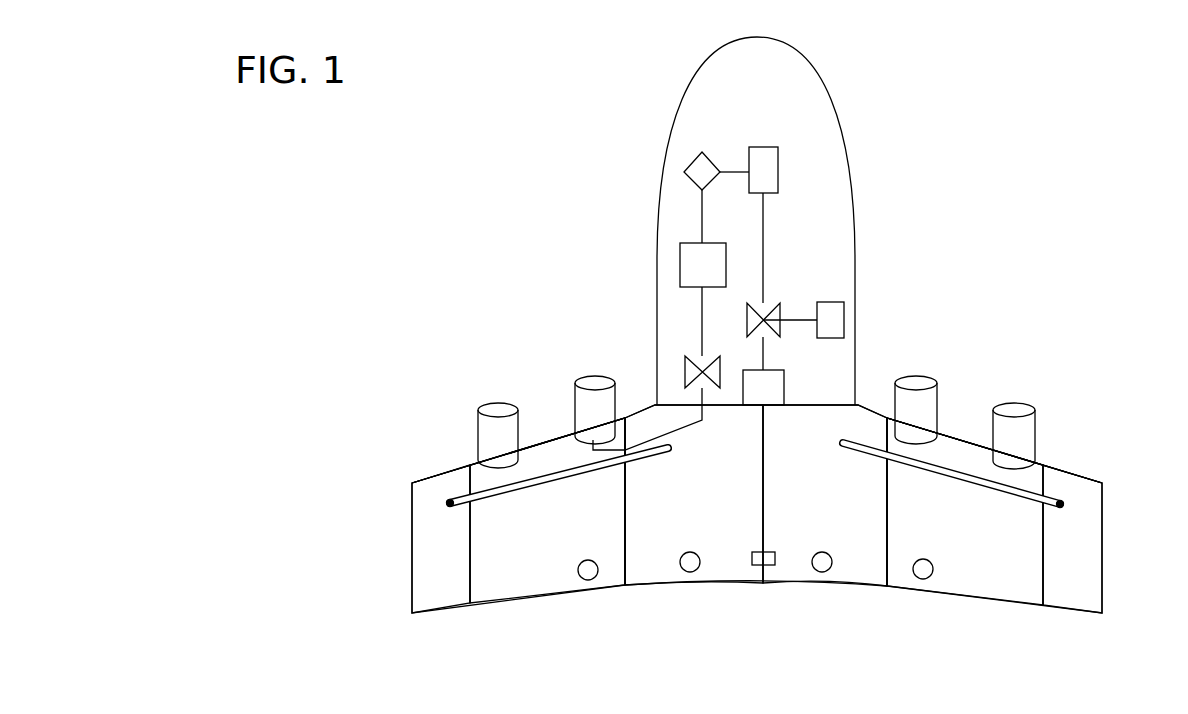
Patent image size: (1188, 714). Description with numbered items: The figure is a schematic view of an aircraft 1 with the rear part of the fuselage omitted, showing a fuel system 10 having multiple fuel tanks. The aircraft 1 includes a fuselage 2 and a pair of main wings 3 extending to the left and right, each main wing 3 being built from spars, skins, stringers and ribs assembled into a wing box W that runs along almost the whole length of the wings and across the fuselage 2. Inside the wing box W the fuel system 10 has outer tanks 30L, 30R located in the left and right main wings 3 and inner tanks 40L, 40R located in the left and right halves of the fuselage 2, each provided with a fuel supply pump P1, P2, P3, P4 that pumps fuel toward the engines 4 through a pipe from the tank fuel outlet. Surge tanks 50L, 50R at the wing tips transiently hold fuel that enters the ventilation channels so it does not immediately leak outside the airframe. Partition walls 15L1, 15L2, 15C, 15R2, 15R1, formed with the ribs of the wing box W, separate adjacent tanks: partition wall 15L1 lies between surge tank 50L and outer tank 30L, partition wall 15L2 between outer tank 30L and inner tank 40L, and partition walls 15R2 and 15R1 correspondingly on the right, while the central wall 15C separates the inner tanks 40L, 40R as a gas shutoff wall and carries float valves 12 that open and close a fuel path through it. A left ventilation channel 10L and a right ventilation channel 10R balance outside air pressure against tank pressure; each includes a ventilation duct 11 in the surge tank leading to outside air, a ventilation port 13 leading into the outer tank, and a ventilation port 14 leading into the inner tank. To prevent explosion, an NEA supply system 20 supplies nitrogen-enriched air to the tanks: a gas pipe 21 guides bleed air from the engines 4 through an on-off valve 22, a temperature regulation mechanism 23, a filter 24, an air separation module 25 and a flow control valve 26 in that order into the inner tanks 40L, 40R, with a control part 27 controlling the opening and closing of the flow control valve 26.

The aircraft 1 is at (934, 137).
The fuselage 2 is at (862, 205).
The main wing 3 is at (428, 468).
The engine 4 is at (495, 402).
The fuel system 10 is at (883, 602).
The left ventilation channel 10L is at (557, 470).
The right ventilation channel 10R is at (970, 470).
The ventilation duct 11 is at (446, 505).
The float valve 12 is at (751, 558).
The ventilation port 13 is at (564, 480).
The ventilation port 14 is at (672, 447).
The partition wall 15L1 is at (472, 572).
The partition wall 15L2 is at (628, 520).
The central wall 15C is at (766, 496).
The partition wall 15R1 is at (1044, 560).
The partition wall 15R2 is at (890, 540).
The NEA supply system 20 is at (769, 116).
The gas pipe 21 is at (736, 172).
The on-off valve 22 is at (688, 368).
The temperature regulation mechanism 23 is at (680, 265).
The filter 24 is at (690, 160).
The air separation module 25 is at (779, 172).
The flow control valve 26 is at (770, 305).
The control part 27 is at (845, 318).
The outer tank 30L is at (525, 603).
The outer tank 30R is at (975, 600).
The inner tank 40L is at (713, 590).
The inner tank 40R is at (795, 590).
The surge tank 50L is at (425, 600).
The surge tank 50R is at (1072, 605).
The fuel supply pump P1 is at (590, 581).
The fuel supply pump P2 is at (688, 573).
The fuel supply pump P3 is at (822, 573).
The fuel supply pump P4 is at (922, 580).
The wing box W is at (1114, 586).